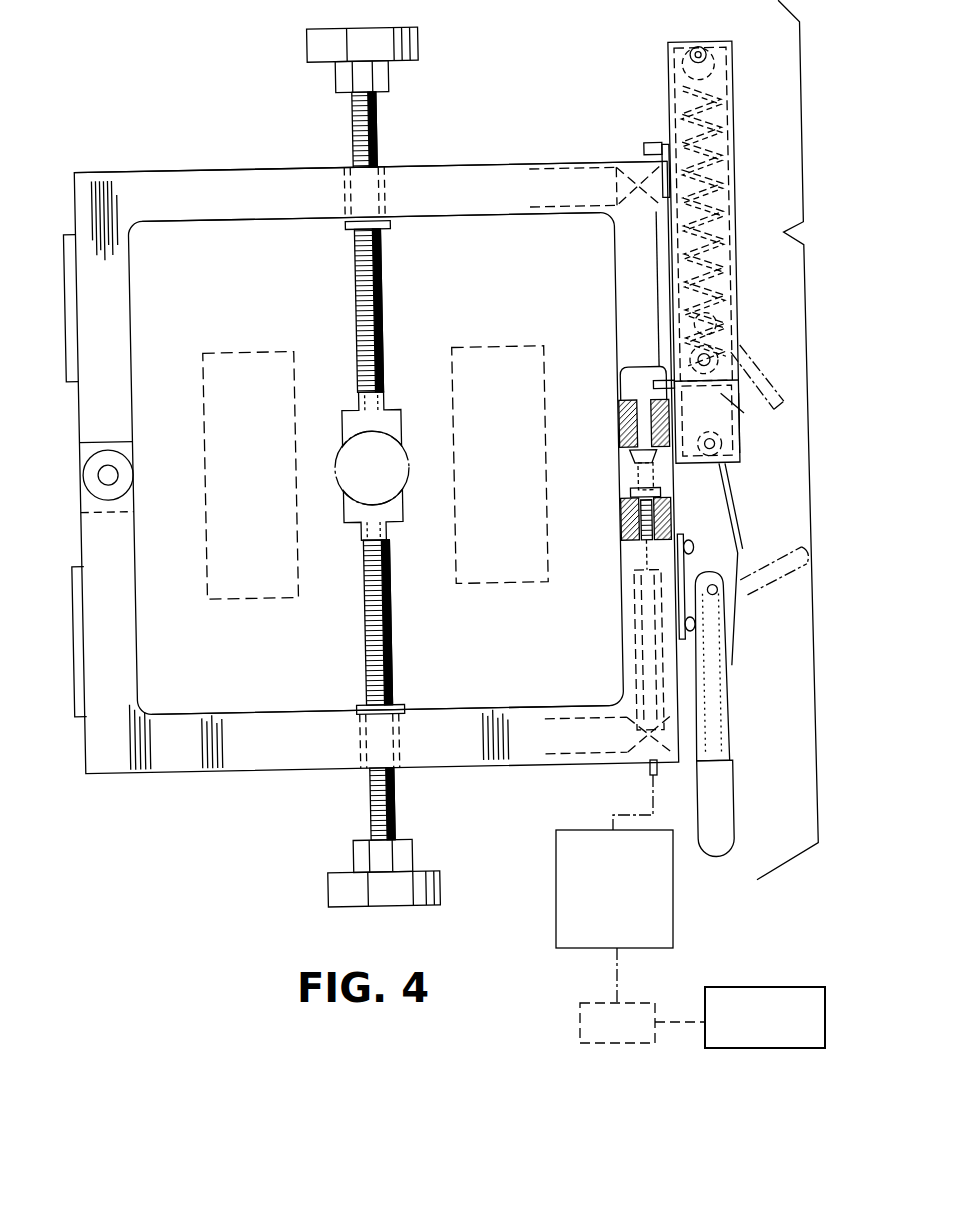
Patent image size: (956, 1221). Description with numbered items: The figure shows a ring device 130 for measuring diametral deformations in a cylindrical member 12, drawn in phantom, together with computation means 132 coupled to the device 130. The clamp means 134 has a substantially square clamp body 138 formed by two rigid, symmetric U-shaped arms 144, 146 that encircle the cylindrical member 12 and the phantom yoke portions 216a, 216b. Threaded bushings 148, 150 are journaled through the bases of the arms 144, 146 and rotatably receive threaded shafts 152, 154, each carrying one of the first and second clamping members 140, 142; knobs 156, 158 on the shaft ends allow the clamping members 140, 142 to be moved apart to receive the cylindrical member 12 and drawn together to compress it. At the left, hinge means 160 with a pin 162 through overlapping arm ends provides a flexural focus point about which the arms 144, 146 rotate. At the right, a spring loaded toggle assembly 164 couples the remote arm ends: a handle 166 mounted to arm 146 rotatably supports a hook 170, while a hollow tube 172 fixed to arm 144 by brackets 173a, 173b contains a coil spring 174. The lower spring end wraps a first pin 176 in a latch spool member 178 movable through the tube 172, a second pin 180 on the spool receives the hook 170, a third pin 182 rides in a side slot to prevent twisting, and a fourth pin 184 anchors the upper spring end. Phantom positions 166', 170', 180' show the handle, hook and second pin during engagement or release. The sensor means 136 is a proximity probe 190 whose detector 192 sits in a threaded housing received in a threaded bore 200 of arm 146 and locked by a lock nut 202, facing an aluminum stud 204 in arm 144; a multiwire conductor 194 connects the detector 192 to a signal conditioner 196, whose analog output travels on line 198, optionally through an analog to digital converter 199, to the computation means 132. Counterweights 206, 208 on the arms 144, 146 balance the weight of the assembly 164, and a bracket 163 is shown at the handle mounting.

The cylindrical member 12 is at (385, 472).
The ring device 130 is at (503, 144).
The computation means 132 is at (738, 987).
The clamp means 134 is at (271, 160).
The sensor means 136 is at (630, 465).
The clamp body 138 is at (408, 191).
The first clamping member 140 is at (351, 420).
The second clamping member 142 is at (344, 509).
The first U-shaped arm 144 is at (243, 209).
The second U-shaped arm 146 is at (235, 719).
The threaded bushing 148 is at (393, 228).
The threaded bushing 150 is at (390, 708).
The threaded shaft 152 is at (387, 280).
The threaded shaft 154 is at (362, 642).
The knob 156 is at (353, 36).
The knob 158 is at (397, 906).
The hinge means 160 is at (122, 461).
The pin 162 is at (120, 455).
The mounting plate 163 is at (692, 554).
The spring loaded toggle assembly 164 is at (777, 440).
The handle 166 is at (736, 713).
The handle (phantom position) 166' is at (774, 554).
The hook 170 is at (747, 563).
The hook (phantom position) 170' is at (771, 377).
The hollow tube 172 is at (739, 165).
The bracket 173a is at (666, 152).
The bracket 173b is at (657, 373).
The coil spring 174 is at (733, 93).
The first pin 176 is at (718, 365).
The latch spool member 178 is at (740, 447).
The second pin 180 is at (733, 432).
The second pin (phantom position) 180' is at (747, 318).
The third pin 182 is at (723, 407).
The fourth pin 184 is at (714, 62).
The proximity probe 190 is at (635, 583).
The proximity detector 192 is at (637, 483).
The multiwire conductor 194 is at (629, 543).
The signal conditioner 196 is at (556, 848).
The line 198 is at (612, 985).
The analog to digital converter circuit 199 is at (580, 1030).
The threaded bore 200 is at (629, 518).
The lock nut 202 is at (628, 496).
The aluminum stud 204 is at (623, 442).
The counterweight 206 is at (76, 304).
The counterweight 208 is at (77, 622).
The yoke portion 216a is at (228, 430).
The yoke portion 216b is at (478, 430).